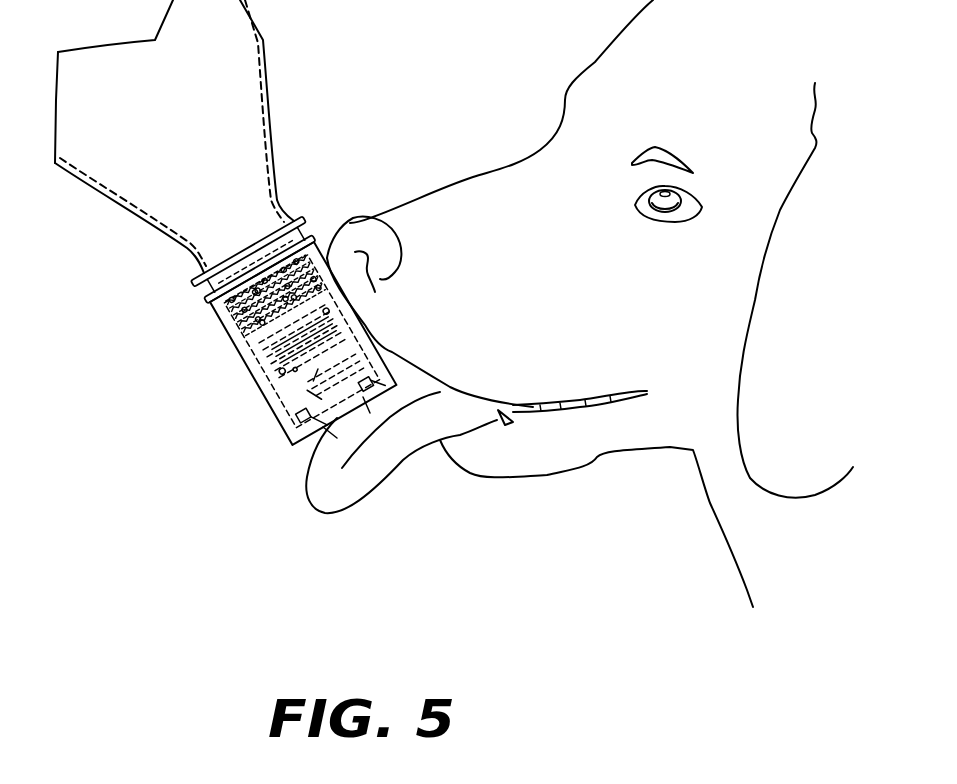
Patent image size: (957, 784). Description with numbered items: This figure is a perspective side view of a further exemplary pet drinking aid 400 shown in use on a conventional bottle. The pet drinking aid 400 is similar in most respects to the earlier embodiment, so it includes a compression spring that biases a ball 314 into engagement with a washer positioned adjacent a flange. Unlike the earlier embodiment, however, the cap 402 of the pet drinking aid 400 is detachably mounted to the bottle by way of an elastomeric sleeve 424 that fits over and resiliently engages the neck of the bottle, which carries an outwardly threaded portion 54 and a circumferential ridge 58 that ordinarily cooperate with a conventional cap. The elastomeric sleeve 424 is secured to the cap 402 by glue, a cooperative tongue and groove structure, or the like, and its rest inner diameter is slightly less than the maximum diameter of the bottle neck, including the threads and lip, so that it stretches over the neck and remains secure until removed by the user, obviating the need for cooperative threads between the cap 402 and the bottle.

The outwardly threaded portion 54 is at (222, 328).
The circumferential ridge 58 is at (312, 240).
The ball 314 is at (283, 428).
The pet drinking aid 400 is at (389, 338).
The cap 402 is at (262, 393).
The elastomeric sleeve 424 is at (330, 248).